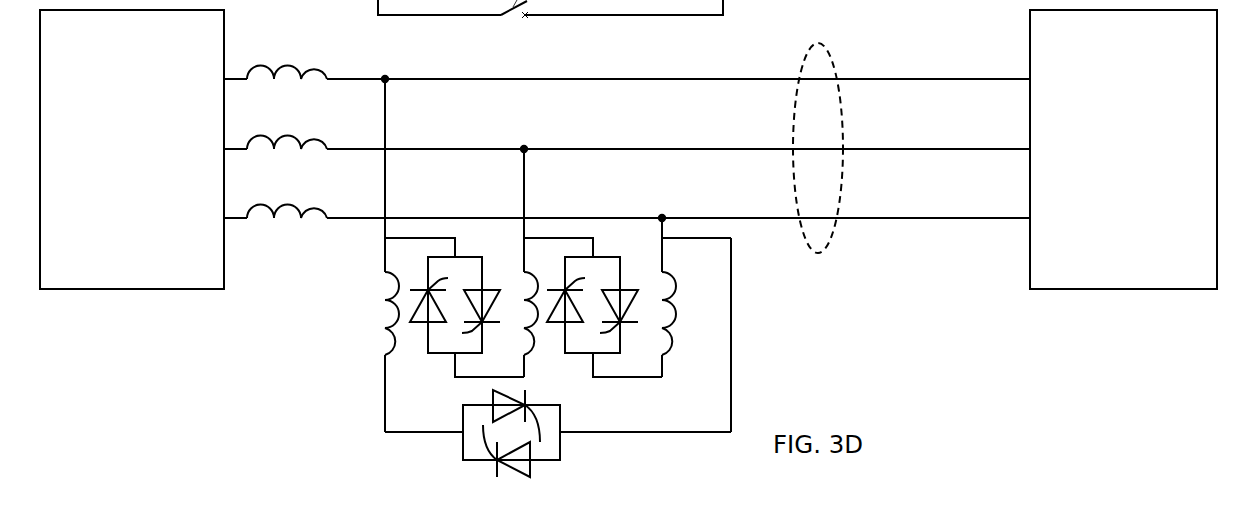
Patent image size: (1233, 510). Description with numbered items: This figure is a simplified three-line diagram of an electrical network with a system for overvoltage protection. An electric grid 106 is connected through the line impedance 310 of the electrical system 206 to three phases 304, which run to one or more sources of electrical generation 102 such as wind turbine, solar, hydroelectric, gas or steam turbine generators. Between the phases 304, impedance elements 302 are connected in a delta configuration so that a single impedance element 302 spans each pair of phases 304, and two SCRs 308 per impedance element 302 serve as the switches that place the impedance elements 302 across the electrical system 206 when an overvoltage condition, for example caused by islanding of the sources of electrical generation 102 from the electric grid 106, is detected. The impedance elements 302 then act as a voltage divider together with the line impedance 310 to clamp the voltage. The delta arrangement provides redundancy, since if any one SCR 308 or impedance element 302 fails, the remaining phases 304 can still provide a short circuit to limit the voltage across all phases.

The sources of electrical generation 102 is at (1140, 212).
The electric grid 106 is at (149, 188).
The electrical system 206 is at (826, 249).
The impedance element 302 is at (387, 278).
The phase 304 is at (880, 79).
The SCR 308 is at (480, 332).
The impedance of the electrical system 310 is at (273, 60).